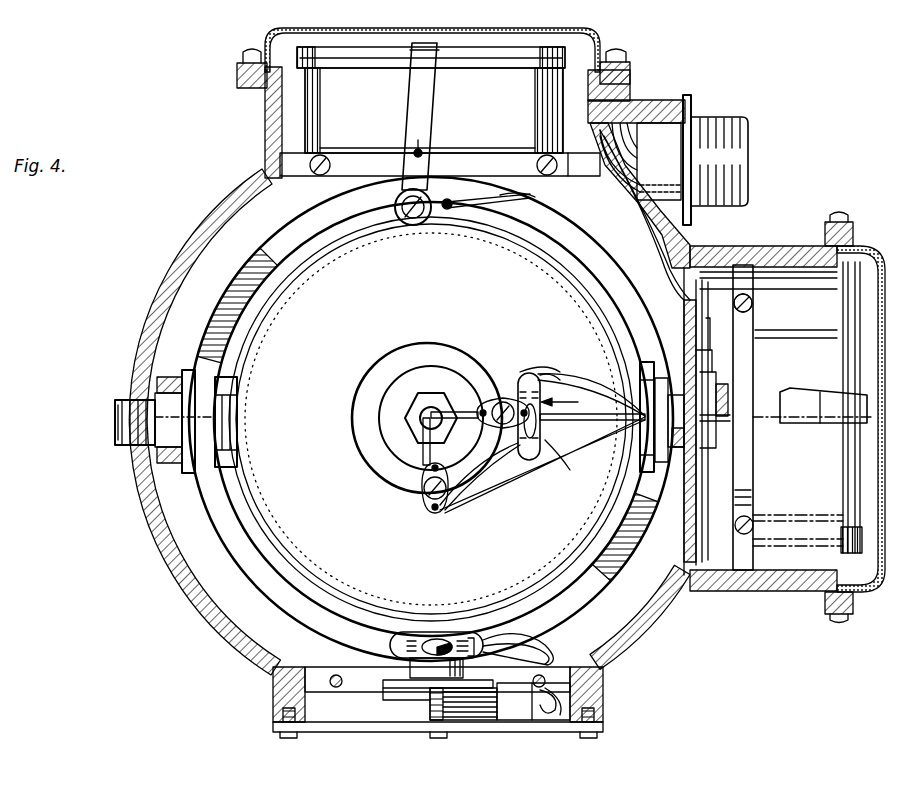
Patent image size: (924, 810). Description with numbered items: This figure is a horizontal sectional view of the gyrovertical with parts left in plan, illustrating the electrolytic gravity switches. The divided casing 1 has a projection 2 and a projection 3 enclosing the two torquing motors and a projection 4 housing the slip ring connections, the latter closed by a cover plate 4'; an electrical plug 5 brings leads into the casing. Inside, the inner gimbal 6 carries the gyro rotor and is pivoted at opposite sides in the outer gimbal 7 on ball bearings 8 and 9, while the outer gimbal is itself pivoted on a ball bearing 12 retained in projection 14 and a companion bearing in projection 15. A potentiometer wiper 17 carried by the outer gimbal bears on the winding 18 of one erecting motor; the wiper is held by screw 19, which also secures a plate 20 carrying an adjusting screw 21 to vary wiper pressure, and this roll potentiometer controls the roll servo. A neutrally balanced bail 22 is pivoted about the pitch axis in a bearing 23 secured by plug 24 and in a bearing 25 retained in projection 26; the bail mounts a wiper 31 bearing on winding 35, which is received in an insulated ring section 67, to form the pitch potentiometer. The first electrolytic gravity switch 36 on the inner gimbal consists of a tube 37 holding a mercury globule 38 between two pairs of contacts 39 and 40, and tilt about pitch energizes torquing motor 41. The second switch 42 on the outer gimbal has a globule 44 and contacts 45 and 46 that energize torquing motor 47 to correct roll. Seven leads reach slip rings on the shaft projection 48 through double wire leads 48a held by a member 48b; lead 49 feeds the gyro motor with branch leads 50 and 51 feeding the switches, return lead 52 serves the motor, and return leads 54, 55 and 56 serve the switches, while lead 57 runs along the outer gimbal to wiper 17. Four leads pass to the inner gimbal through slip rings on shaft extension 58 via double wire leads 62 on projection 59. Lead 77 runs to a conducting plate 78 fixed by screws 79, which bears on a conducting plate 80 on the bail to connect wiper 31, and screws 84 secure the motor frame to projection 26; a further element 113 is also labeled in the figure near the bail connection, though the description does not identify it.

The divided casing 1 is at (650, 636).
The projection 2 is at (886, 365).
The projection 3 is at (266, 112).
The projection 4 is at (416, 694).
The cover plate 4' is at (438, 740).
The electrical plug 5 is at (735, 138).
The inner gimbal 6 is at (290, 531).
The outer gimbal 7 is at (226, 520).
The ball bearing 8 is at (655, 384).
The ball bearing 9 is at (238, 412).
The ball bearing 12 is at (415, 680).
The projection 14 is at (318, 675).
The projection 15 is at (292, 178).
The potentiometer wiper 17 is at (414, 84).
The winding 18 is at (366, 48).
The screw 19 is at (413, 226).
The plate 20 is at (430, 226).
The adjusting screw 21 is at (412, 150).
The bail 22 is at (186, 470).
The bearing 23 is at (170, 380).
The plug 24 is at (118, 423).
The bearing 25 is at (735, 396).
The projection 26 is at (746, 566).
The wiper 31 is at (822, 393).
The winding 35 is at (852, 519).
The first electrolytic gravity switch 36 is at (571, 403).
The tube 37 is at (546, 452).
The globule 38 is at (540, 426).
The pair of contacts 39 is at (520, 394).
The pair of contacts 40 is at (531, 462).
The torquing motor 41 is at (476, 74).
The electrolytic gravity switch 42 is at (456, 632).
The globule 44 is at (438, 640).
The pair of contacts 45 is at (418, 625).
The pair of contacts 46 is at (475, 630).
The torquing motor 47 is at (770, 298).
The shaft projection 48 is at (438, 721).
The double wire leads 48a is at (473, 721).
The member 48b is at (516, 721).
The lead 49 is at (510, 490).
The branch lead 50 is at (398, 620).
The branch lead 51 is at (480, 490).
The return lead 52 is at (591, 420).
The return lead 54 is at (548, 374).
The return lead 55 is at (530, 372).
The return lead 56 is at (546, 660).
The lead 57 is at (535, 200).
The shaft extension 58 is at (672, 447).
The projection 59 is at (676, 345).
The double wire leads 62 is at (602, 386).
The insulated ring section 67 is at (860, 330).
The lead 77 is at (730, 318).
The conducting plate 78 is at (726, 356).
The screws 79 is at (721, 331).
The conducting plate 80 is at (716, 436).
The screws 84 is at (716, 381).
The pin 113 is at (722, 416).